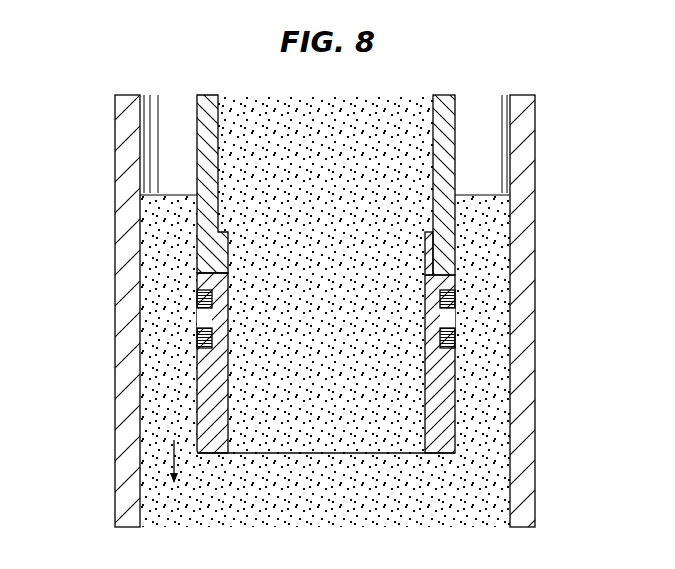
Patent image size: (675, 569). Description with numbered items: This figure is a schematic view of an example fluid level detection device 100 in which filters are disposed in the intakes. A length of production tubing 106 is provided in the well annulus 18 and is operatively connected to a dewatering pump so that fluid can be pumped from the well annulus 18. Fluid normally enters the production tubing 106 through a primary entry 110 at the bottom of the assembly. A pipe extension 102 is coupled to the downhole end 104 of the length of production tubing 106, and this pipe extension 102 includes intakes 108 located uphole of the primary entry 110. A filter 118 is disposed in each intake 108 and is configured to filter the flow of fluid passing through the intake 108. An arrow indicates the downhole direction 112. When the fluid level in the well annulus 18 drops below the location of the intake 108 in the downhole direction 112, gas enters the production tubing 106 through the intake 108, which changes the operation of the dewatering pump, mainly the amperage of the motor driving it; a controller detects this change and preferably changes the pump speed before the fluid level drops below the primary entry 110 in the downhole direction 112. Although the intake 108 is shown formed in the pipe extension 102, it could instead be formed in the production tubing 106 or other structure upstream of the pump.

The fluid level detection device 100 is at (476, 139).
The well annulus 18 is at (490, 390).
The pipe extension 102 is at (197, 384).
The downhole end 104 is at (457, 242).
The production tubing 106 is at (197, 145).
The intake 108 is at (211, 317).
The primary entry 110 is at (375, 453).
The downhole direction 112 is at (173, 458).
The filter 118 is at (451, 317).